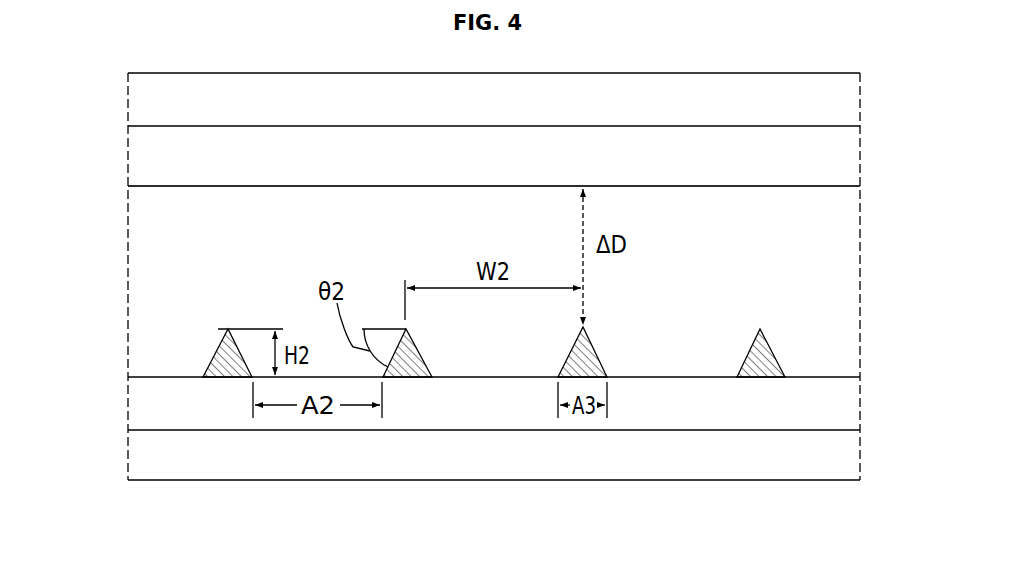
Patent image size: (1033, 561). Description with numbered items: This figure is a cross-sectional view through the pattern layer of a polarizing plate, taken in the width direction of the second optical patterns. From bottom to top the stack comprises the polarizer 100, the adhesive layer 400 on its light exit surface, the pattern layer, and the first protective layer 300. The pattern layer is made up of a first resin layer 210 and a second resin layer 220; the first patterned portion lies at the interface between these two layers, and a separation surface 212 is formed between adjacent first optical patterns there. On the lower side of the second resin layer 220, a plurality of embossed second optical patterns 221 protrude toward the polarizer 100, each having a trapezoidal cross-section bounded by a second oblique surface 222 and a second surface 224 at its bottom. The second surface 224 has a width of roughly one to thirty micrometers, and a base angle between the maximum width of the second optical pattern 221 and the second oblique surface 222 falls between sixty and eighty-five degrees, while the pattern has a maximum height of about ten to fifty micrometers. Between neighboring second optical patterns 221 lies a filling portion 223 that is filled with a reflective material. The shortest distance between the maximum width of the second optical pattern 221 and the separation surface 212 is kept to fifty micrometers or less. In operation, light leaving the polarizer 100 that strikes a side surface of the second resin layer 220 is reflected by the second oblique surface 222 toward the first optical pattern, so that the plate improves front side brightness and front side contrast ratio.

The polarizer 100 is at (128, 457).
The adhesive layer 400 is at (128, 409).
The second resin layer 220 is at (128, 279).
The second optical pattern 221 is at (698, 323).
The second oblique surface 222 is at (403, 377).
The filling portion 223 is at (757, 377).
The second surface 224 is at (289, 377).
The first resin layer 210 is at (128, 158).
The separation surface 212 is at (825, 186).
The first protective layer 300 is at (128, 100).